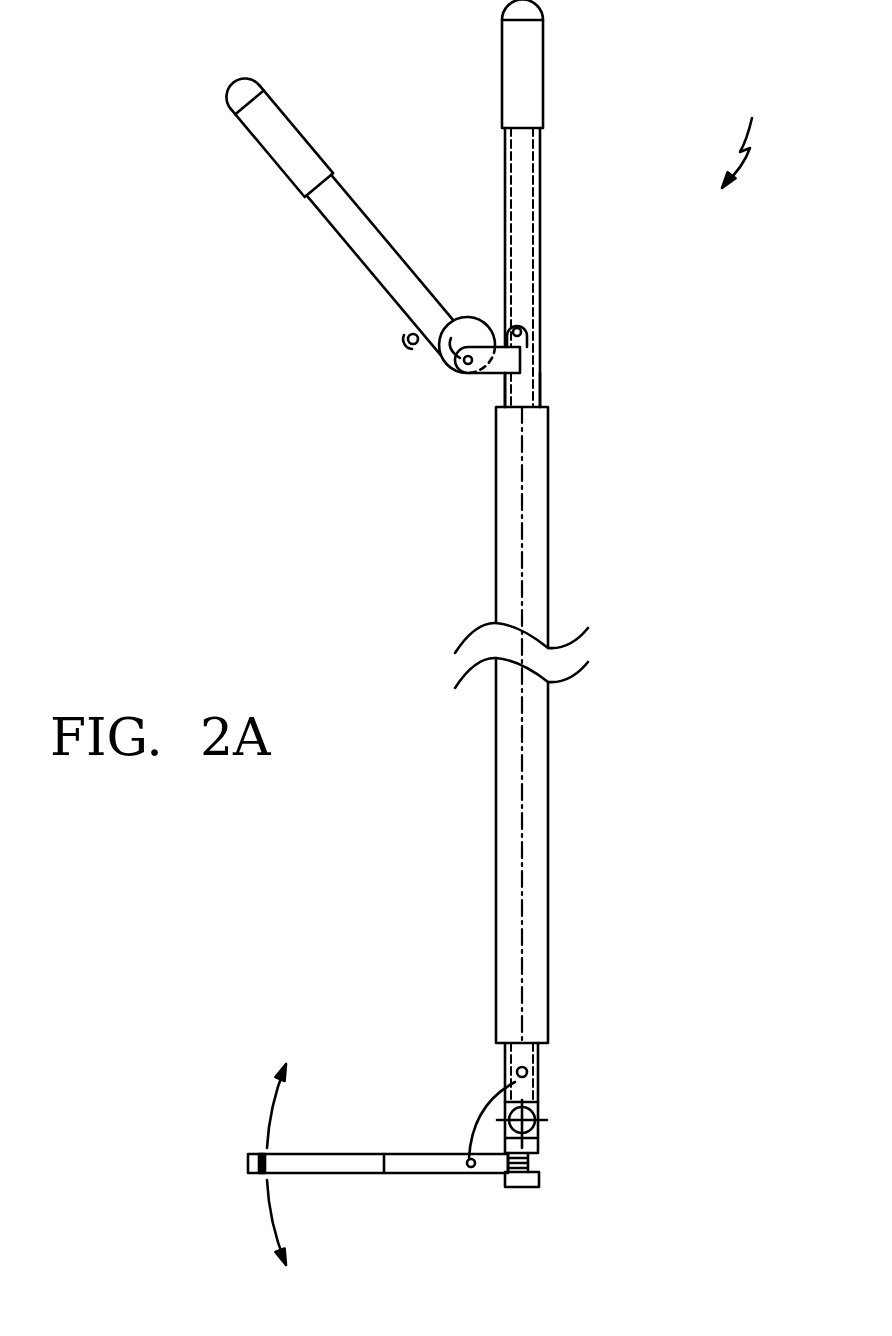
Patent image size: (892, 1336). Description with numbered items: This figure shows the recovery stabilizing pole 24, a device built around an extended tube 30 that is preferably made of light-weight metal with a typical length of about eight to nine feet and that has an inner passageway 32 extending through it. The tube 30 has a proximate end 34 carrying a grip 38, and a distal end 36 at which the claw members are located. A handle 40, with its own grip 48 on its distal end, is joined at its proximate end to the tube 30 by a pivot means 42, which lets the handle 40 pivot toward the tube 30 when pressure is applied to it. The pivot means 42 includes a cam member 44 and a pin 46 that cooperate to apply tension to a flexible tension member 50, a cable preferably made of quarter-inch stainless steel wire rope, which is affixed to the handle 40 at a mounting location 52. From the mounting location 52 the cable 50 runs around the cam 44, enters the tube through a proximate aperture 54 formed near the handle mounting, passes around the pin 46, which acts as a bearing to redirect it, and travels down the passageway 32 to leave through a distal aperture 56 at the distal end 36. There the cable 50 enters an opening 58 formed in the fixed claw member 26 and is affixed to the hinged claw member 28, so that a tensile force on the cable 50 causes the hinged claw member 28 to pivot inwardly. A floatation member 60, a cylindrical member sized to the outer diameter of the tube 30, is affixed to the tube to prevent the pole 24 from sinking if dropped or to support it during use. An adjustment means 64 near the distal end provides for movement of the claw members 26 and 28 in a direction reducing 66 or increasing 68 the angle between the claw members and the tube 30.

The recovery stabilizing pole 24 is at (743, 131).
The fixed claw member 26 is at (338, 1160).
The hinged claw member 28 is at (415, 1168).
The extended tube 30 is at (583, 267).
The inner passageway 32 is at (528, 387).
The proximate end 34 is at (528, 162).
The distal end 36 is at (540, 1083).
The grip 38 is at (544, 67).
The handle 40 is at (373, 280).
The pivot means 42 is at (483, 377).
The cam member 44 is at (465, 370).
The pin 46 is at (530, 326).
The grip 48 is at (252, 143).
The flexible tension member 50 is at (523, 457).
The mounting location 52 is at (408, 342).
The proximate aperture 54 is at (498, 323).
The distal aperture 56 is at (527, 1068).
The opening 58 is at (473, 1170).
The floatation member 60 is at (548, 580).
The adjustment means 64 is at (540, 1125).
The direction reducing the angle 66 is at (268, 1120).
The direction increasing the angle 68 is at (268, 1210).